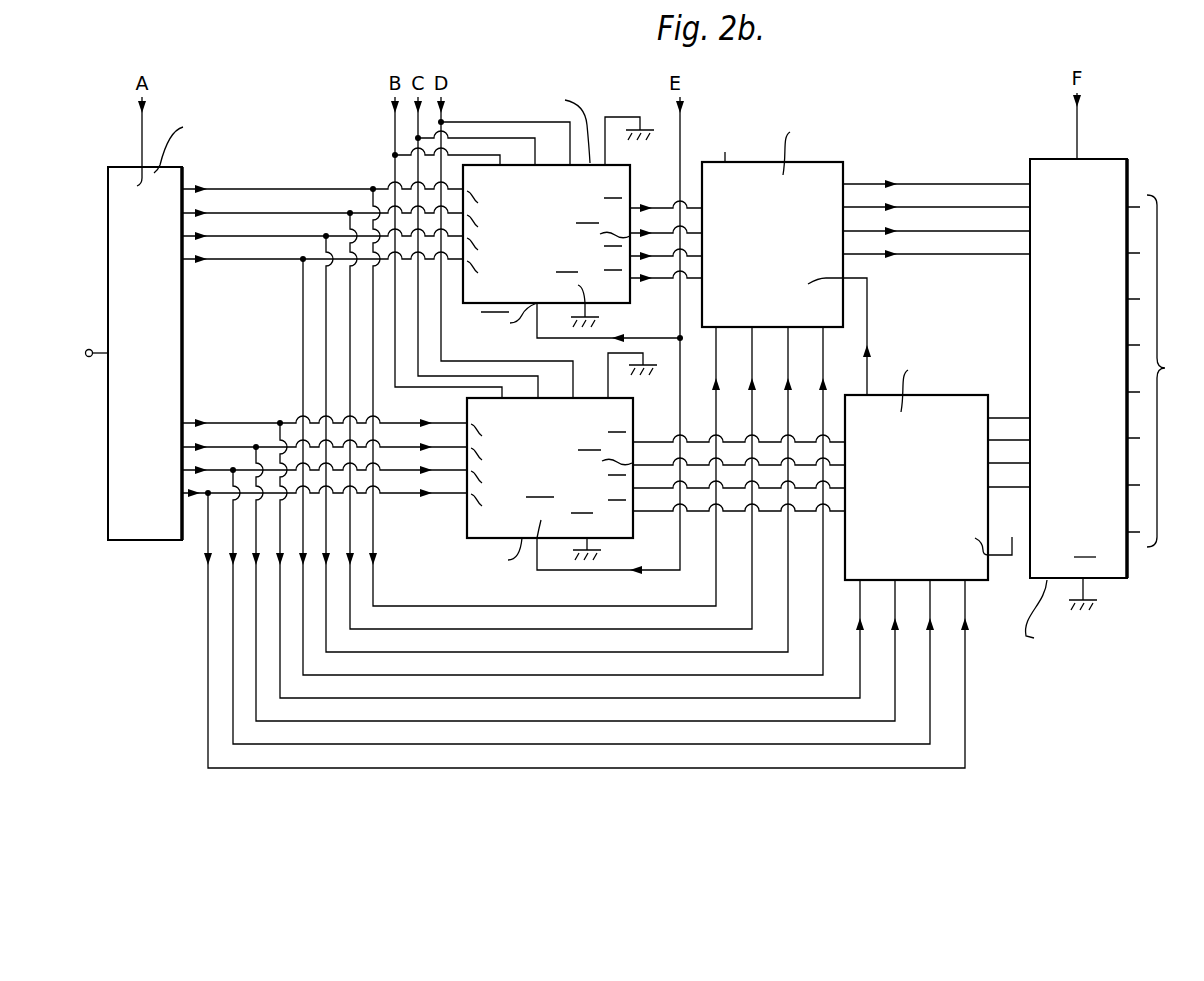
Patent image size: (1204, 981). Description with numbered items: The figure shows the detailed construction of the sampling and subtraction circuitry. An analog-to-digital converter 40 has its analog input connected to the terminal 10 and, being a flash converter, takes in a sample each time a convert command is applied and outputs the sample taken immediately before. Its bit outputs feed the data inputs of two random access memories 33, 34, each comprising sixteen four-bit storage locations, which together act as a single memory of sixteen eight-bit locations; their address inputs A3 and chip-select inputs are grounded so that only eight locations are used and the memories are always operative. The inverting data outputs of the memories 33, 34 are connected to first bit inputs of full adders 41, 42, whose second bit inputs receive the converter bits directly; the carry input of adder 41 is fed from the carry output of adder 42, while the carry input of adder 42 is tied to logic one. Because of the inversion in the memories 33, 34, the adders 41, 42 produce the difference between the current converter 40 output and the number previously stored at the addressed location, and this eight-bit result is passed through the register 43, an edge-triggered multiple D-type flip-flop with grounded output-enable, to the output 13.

The terminal 10 is at (87, 349).
The output 13 is at (1175, 371).
The random access memory 33 is at (555, 244).
The random access memory 34 is at (561, 480).
The analog-to-digital converter 40 is at (170, 366).
The full adder 41 is at (785, 243).
The full adder 42 is at (905, 500).
The register 43 is at (1062, 382).